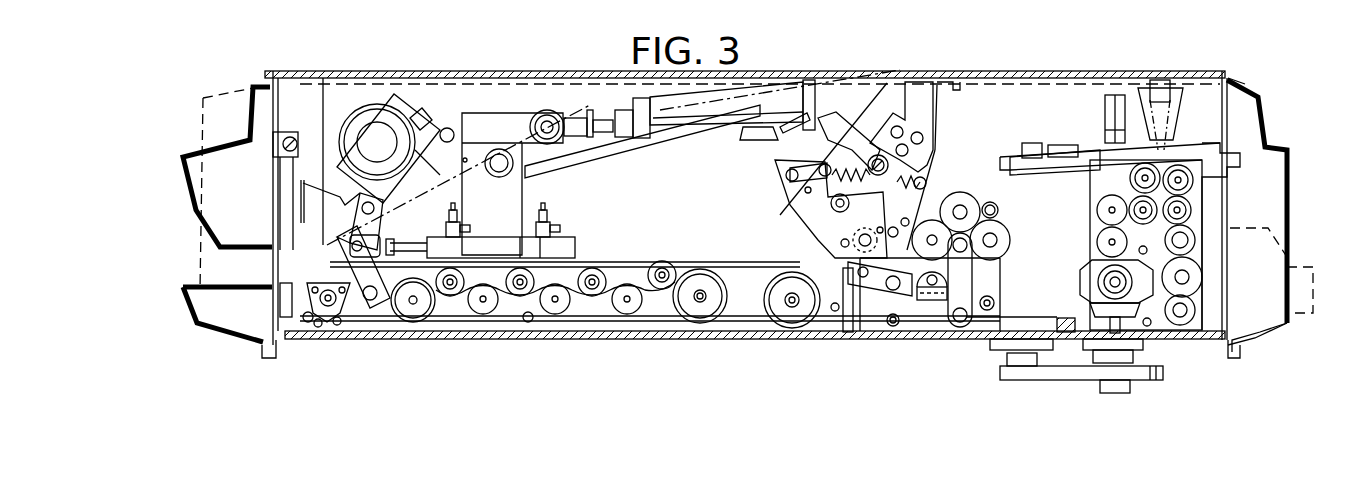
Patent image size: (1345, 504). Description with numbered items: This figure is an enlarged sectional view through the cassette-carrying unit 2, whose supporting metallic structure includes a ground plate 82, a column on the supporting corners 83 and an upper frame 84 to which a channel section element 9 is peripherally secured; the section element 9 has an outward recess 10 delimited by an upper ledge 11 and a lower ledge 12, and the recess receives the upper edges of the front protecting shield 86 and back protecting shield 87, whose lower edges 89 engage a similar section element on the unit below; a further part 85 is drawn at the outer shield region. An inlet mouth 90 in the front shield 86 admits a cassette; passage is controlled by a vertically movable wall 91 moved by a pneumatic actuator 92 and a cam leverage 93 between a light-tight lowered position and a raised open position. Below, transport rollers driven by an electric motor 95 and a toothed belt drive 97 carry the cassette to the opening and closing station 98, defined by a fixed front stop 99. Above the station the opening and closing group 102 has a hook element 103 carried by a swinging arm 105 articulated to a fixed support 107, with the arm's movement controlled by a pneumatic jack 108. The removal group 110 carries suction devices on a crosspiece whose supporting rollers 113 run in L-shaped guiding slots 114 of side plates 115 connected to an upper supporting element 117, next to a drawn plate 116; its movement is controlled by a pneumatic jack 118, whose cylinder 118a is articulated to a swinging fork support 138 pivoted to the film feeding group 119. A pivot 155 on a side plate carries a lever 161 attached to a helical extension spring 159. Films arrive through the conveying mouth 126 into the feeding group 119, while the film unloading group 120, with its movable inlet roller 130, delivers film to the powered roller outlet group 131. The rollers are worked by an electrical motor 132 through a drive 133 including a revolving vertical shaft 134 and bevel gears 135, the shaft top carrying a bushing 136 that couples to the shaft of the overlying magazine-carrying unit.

The cassette-carrying unit 2 is at (1000, 66).
The channel section element 9 is at (262, 356).
The recess 10 is at (1236, 78).
The upper ledge 11 is at (1238, 80).
The lower ledge 12 is at (1233, 100).
The ground plate 82 is at (596, 339).
The supporting corner column 83 is at (300, 92).
The upper frame 84 is at (1196, 74).
The cover 85 is at (268, 84).
The front protecting shield 86 is at (186, 162).
The back protecting shield 87 is at (1270, 135).
The lower edges of protecting shields 89 is at (255, 343).
The inlet mouth 90 is at (285, 270).
The vertically movable wall 91 is at (279, 200).
The pneumatic actuator 92 is at (503, 240).
The cam leverage 93 is at (338, 190).
The electric motor 95 is at (378, 110).
The toothed belt drive 97 is at (492, 318).
The opening and closing station 98 is at (762, 260).
The fixed front stop 99 is at (847, 318).
The opening and closing group 102 is at (618, 108).
The hook element 103 is at (800, 96).
The swinging arm 105 is at (592, 168).
The fixed support 107 is at (440, 112).
The pneumatic jack 108 is at (705, 98).
The removal group 110 is at (940, 148).
The supporting rollers 113 is at (905, 98).
The L-shaped guiding slots 114 is at (850, 168).
The side plates 115 is at (886, 88).
The plate 116 is at (928, 130).
The upper supporting element 117 is at (958, 82).
The pneumatic jack 118 is at (1114, 93).
The cylinder of jack 118a is at (1100, 144).
The film feeding group 119 is at (1200, 206).
The film unloading group 120 is at (938, 315).
The conveying mouth 126 is at (1160, 104).
The movable inlet roller 130 is at (868, 292).
The powered roller outlet group 131 is at (1274, 242).
The electrical motor 132 is at (1000, 345).
The drive 133 is at (1150, 355).
The revolving vertical shaft 134 is at (1108, 328).
The bevel gears 135 is at (1100, 268).
The bushing 136 is at (1120, 112).
The swinging fork support 138 is at (1088, 158).
The pivot 155 is at (786, 180).
The helical extension spring 159 is at (830, 205).
The lever 161 is at (775, 160).